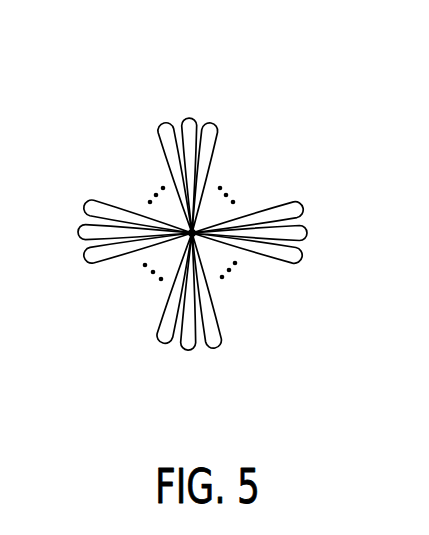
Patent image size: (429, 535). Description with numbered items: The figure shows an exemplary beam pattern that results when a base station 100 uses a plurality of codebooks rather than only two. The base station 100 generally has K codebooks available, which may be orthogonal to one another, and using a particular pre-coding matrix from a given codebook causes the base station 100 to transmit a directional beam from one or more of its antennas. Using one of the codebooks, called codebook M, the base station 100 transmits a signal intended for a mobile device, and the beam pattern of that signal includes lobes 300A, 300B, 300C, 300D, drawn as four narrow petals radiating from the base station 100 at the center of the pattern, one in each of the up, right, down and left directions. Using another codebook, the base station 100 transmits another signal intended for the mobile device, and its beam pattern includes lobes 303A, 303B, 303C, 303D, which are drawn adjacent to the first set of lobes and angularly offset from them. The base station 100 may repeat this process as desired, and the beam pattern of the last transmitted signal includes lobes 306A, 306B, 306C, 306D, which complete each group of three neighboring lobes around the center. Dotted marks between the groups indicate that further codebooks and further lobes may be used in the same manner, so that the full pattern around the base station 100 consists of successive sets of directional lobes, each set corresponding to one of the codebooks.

The base station 100 is at (186, 214).
The lobe 300A is at (188, 122).
The lobe 300B is at (310, 237).
The lobe 300C is at (183, 353).
The lobe 300D is at (82, 226).
The lobe 303A is at (223, 137).
The lobe 303B is at (298, 258).
The lobe 303C is at (164, 344).
The lobe 303D is at (89, 206).
The lobe 306A is at (303, 209).
The lobe 306B is at (215, 346).
The lobe 306C is at (88, 257).
The lobe 306D is at (163, 136).